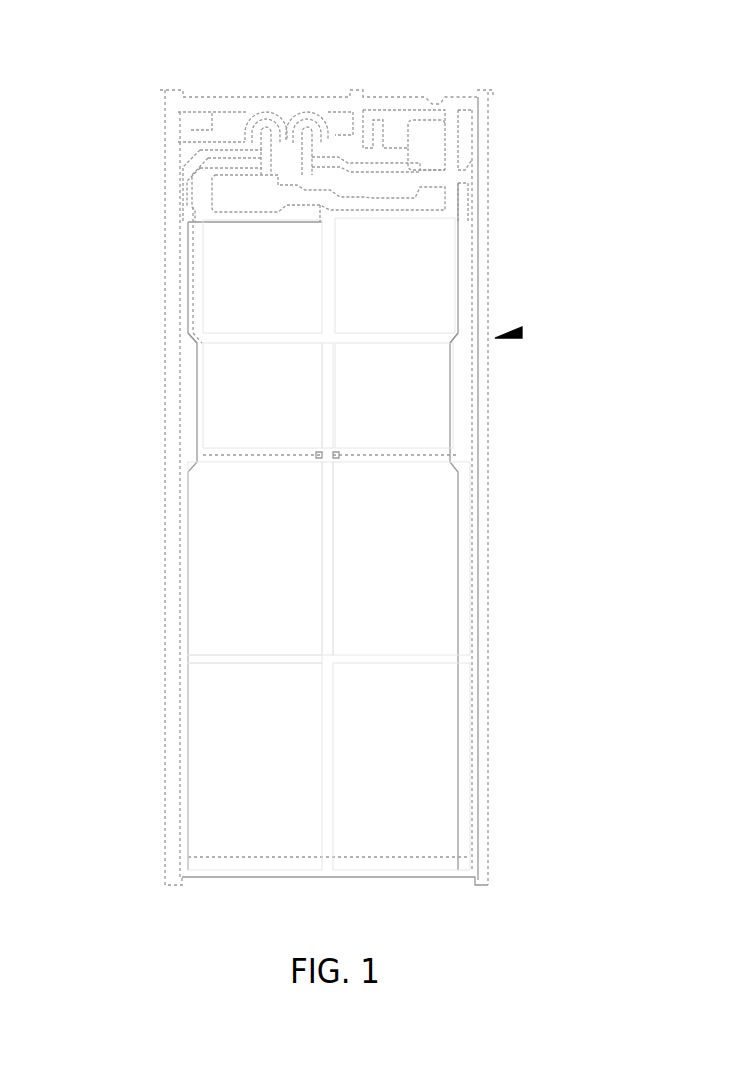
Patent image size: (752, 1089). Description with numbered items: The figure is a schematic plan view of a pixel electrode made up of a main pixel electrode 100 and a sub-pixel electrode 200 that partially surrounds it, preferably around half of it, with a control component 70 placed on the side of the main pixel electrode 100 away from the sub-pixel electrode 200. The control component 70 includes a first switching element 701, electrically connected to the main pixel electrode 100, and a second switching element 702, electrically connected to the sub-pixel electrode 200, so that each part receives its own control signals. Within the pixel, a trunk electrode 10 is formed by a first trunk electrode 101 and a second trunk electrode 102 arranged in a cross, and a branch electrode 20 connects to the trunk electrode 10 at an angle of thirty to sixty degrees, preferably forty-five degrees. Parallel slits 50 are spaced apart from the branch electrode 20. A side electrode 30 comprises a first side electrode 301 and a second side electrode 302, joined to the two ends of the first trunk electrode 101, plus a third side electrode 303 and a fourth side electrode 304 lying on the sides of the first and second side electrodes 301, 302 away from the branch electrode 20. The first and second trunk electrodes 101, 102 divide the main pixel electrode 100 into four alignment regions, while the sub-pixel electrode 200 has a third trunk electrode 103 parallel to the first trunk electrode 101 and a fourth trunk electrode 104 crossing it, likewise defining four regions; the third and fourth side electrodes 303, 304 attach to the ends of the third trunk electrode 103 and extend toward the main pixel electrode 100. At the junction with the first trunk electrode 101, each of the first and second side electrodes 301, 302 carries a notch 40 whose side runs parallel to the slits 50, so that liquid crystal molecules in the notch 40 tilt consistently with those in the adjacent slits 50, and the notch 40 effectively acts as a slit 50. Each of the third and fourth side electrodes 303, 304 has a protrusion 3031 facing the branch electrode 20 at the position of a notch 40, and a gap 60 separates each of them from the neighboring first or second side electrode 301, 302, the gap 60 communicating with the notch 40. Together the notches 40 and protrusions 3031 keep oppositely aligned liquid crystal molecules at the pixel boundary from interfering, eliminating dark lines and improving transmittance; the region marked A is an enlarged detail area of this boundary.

The trunk electrode 10 is at (242, 544).
The first trunk electrode 101 is at (262, 345).
The second trunk electrode 102 is at (325, 423).
The third trunk electrode 103 is at (273, 659).
The fourth trunk electrode 104 is at (325, 540).
The branch electrode 20 is at (193, 245).
The side electrode 30 is at (328, 336).
The first side electrode 301 is at (458, 275).
The second side electrode 302 is at (182, 256).
The third side electrode 303 is at (472, 296).
The fourth side electrode 304 is at (183, 281).
The protrusion 3031 is at (197, 342).
The notch 40 is at (188, 327).
The slit 50 is at (197, 306).
The gap 60 is at (465, 245).
The control component 70 is at (257, 89).
The first switching element 701 is at (253, 110).
The second switching element 702 is at (302, 110).
The main pixel electrode 100 is at (488, 408).
The sub-pixel electrode 200 is at (490, 745).
The region A is at (523, 332).